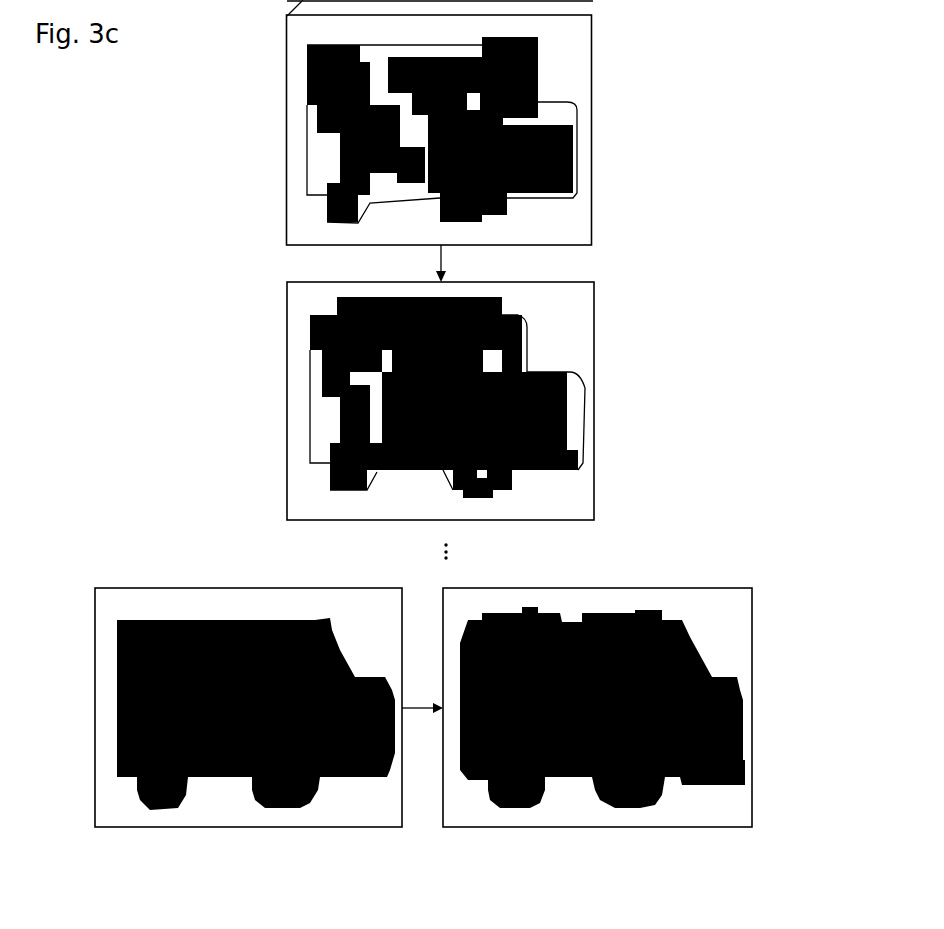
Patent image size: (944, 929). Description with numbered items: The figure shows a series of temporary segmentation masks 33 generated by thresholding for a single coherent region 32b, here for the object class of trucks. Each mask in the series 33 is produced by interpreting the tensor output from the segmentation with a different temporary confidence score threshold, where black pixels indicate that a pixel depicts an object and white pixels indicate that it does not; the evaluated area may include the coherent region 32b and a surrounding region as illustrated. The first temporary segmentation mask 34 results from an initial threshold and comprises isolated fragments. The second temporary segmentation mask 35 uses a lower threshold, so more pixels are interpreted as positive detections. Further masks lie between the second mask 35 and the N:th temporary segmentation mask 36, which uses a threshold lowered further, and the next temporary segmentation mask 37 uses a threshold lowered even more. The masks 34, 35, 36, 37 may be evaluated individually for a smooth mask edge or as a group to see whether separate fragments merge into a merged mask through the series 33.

The coherent region 32b is at (325, 158).
The series of temporary segmentation masks 33 is at (762, 838).
The first temporary segmentation mask 34 is at (652, 145).
The second temporary segmentation mask 35 is at (652, 367).
The N:th temporary segmentation mask 36 is at (158, 562).
The (N+1):th temporary segmentation mask 37 is at (655, 565).